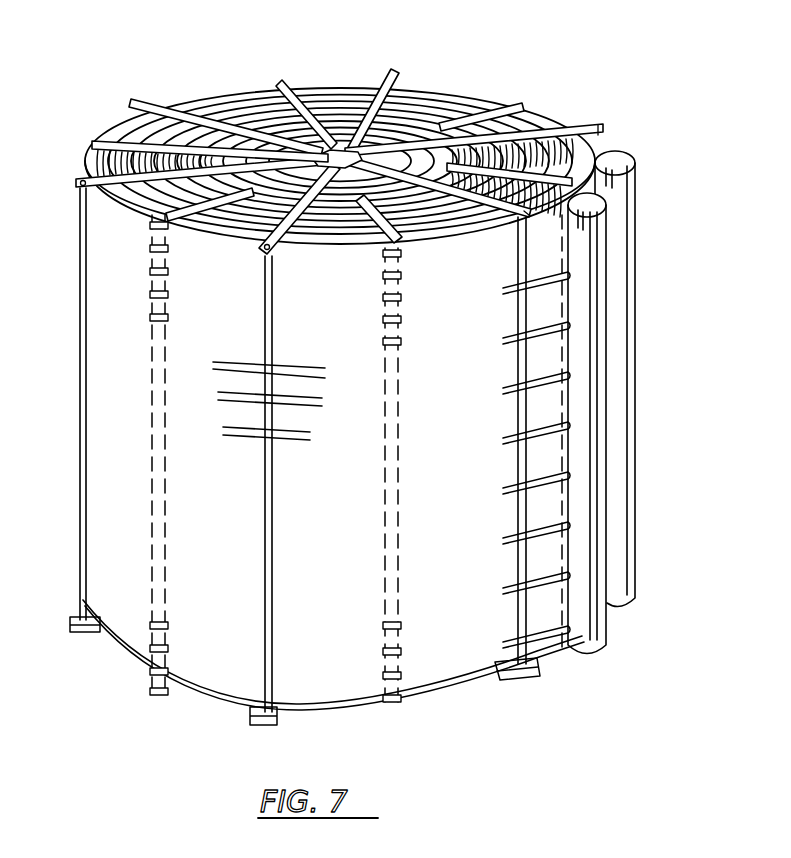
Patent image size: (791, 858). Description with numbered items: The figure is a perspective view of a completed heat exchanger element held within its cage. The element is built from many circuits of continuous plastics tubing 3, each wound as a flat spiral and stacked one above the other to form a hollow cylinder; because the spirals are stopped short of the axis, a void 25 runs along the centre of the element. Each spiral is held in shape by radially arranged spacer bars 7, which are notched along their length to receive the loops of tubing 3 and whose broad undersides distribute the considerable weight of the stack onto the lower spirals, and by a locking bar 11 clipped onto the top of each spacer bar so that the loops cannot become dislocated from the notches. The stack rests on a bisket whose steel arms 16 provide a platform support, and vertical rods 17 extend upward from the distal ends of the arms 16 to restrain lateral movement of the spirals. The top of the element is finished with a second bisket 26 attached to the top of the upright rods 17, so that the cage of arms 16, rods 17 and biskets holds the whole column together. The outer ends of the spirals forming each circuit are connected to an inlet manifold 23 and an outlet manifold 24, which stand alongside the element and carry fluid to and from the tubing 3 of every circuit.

The tubing 3 is at (80, 217).
The spacer bar 7 is at (152, 510).
The locking bar 11 is at (96, 142).
The arm 16 is at (90, 640).
The vertical rod 17 is at (80, 302).
The inlet manifold 23 is at (590, 293).
The outlet manifold 24 is at (617, 203).
The void 25 is at (421, 167).
The second bisket 26 is at (163, 107).